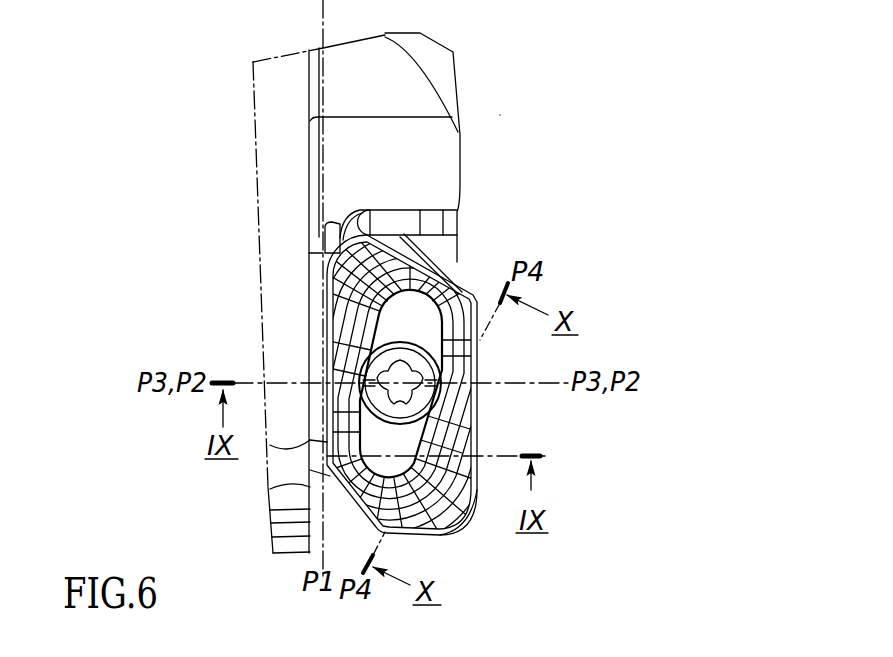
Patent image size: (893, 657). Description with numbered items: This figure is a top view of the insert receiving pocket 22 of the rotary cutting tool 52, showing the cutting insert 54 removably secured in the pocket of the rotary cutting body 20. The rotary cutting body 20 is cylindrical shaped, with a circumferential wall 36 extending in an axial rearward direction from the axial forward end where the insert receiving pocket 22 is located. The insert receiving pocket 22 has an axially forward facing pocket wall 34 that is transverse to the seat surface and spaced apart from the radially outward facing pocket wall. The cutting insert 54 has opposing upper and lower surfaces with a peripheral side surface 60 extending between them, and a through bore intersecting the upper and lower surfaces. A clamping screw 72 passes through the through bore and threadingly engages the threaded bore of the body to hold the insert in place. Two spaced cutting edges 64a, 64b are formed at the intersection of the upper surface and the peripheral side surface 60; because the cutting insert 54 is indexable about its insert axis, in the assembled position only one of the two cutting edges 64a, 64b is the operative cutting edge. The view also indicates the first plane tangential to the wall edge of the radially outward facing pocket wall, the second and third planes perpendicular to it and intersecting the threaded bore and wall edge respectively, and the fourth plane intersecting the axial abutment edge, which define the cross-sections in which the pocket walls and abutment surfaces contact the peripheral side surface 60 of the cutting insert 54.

The rotary cutting body 20 is at (283, 107).
The circumferential wall 36 is at (458, 77).
The rotary cutting tool 52 is at (500, 115).
The cutting edge 64b is at (340, 242).
The axially forward facing pocket wall 34 is at (418, 225).
The insert receiving pocket 22 is at (440, 248).
The cutting insert 54 is at (412, 320).
The peripheral side surface 60 is at (478, 368).
The clamping screw 72 is at (412, 397).
The cutting edge 64a is at (458, 527).